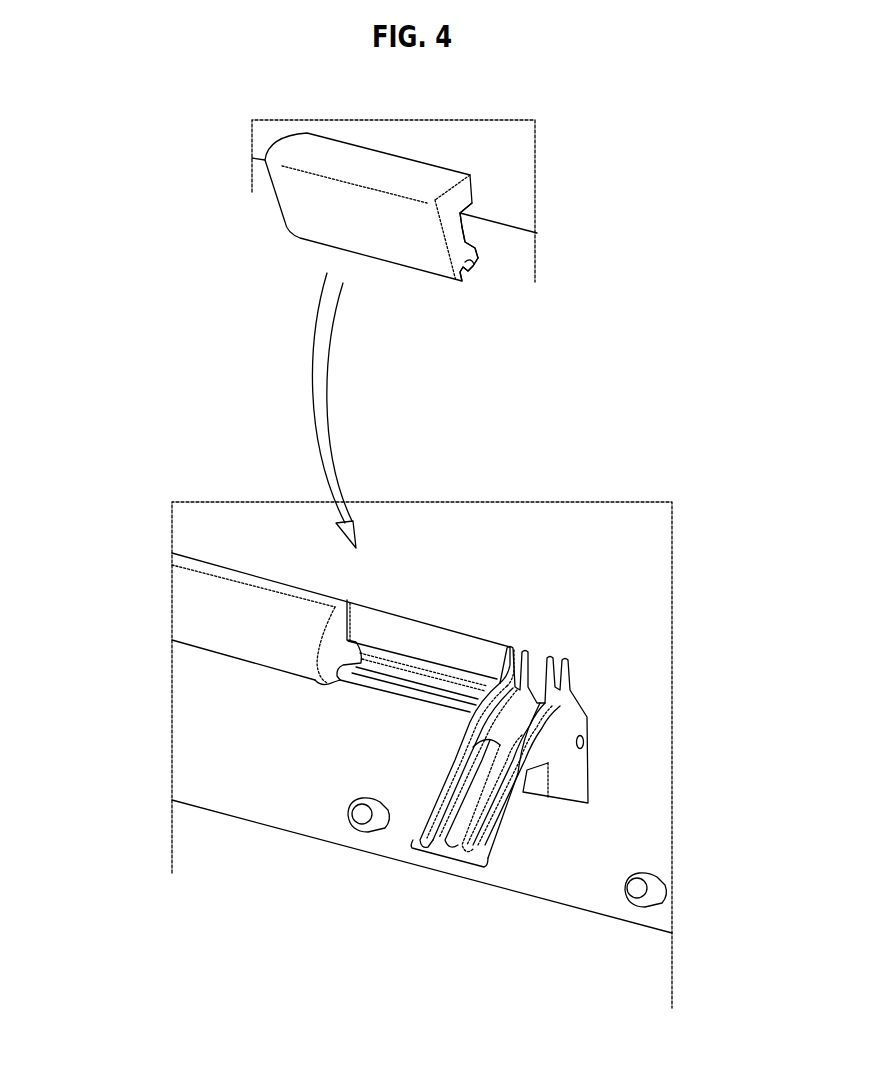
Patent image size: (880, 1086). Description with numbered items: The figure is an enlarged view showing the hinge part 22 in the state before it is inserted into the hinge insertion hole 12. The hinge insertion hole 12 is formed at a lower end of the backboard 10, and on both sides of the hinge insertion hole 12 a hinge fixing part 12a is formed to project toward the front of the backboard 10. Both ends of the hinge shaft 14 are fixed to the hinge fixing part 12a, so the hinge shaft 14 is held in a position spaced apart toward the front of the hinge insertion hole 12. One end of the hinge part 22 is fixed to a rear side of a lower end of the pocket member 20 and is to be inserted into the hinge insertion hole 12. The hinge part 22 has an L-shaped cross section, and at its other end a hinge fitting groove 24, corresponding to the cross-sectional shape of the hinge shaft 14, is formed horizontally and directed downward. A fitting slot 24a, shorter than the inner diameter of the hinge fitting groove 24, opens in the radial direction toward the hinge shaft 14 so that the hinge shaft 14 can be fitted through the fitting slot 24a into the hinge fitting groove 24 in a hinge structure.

The backboard 10 is at (263, 788).
The hinge insertion hole 12 is at (445, 647).
The hinge fixing part 12a is at (200, 593).
The hinge shaft 14 is at (395, 690).
The pocket member 20 is at (510, 163).
The hinge part 22 is at (300, 218).
The hinge fitting groove 24 is at (478, 262).
The fitting slot 24a is at (470, 270).